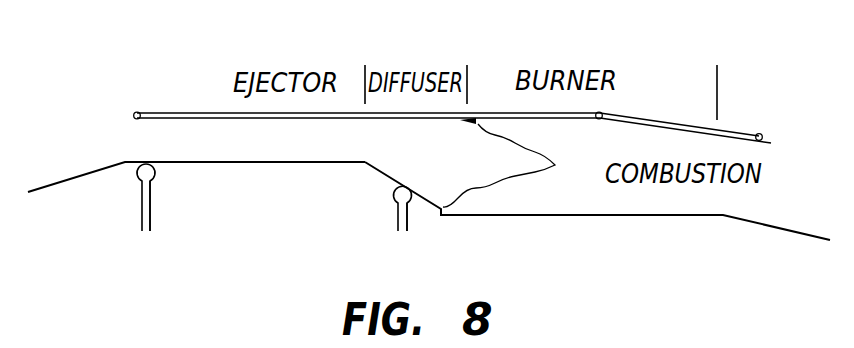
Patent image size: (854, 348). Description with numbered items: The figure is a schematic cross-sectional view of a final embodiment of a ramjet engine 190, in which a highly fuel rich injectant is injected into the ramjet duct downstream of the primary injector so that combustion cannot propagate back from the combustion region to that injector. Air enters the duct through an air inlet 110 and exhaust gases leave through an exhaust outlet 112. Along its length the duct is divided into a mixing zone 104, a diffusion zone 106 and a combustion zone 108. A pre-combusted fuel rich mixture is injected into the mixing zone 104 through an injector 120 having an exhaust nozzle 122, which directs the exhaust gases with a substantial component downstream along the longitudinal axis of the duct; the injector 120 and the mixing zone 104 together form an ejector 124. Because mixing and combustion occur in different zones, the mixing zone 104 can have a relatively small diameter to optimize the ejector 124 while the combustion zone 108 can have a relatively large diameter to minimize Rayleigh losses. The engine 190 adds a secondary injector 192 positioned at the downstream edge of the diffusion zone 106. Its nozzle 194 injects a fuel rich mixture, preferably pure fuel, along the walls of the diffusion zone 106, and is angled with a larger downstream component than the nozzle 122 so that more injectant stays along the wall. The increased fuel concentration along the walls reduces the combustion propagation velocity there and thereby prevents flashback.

The mixing zone 104 is at (303, 152).
The diffusion zone 106 is at (458, 177).
The combustion zone 108 is at (580, 202).
The air inlet 110 is at (143, 144).
The exhaust outlet 112 is at (740, 202).
The injector 120 is at (134, 174).
The exhaust nozzle 122 is at (156, 164).
The ejector 124 is at (205, 132).
The ramjet engine 190 is at (632, 80).
The secondary injector 192 is at (394, 198).
The nozzle 194 is at (412, 196).